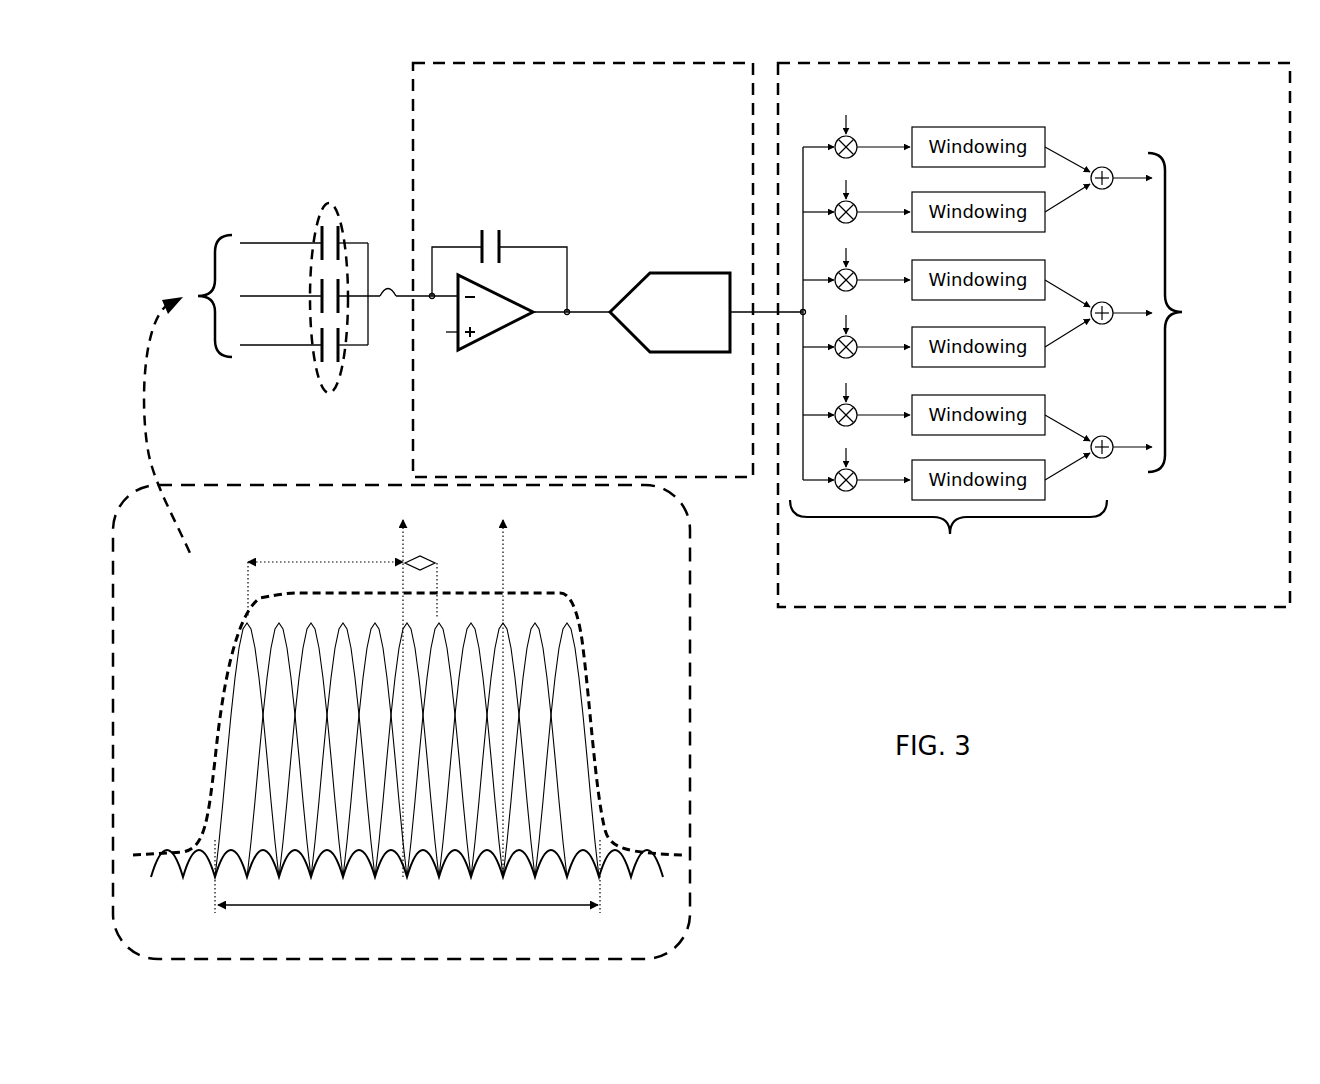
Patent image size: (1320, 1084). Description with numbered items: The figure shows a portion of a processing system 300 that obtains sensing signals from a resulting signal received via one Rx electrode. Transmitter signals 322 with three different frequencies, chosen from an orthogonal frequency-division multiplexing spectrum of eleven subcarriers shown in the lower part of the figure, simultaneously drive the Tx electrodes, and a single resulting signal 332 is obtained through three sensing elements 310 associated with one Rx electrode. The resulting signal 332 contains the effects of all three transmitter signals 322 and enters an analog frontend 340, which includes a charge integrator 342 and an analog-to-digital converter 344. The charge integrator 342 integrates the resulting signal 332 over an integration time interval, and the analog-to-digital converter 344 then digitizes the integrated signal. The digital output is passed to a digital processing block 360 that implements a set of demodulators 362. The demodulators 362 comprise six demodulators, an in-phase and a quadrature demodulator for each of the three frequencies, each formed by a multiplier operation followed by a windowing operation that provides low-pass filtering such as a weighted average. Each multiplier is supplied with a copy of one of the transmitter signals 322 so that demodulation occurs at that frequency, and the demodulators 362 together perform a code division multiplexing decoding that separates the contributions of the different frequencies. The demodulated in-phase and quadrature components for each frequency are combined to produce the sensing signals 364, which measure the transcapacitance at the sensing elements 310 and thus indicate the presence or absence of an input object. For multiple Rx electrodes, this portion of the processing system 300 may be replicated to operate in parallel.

The processing system 300 is at (701, 500).
The sensing elements 310 is at (326, 258).
The transmitter signals 322 is at (690, 922).
The resulting signal 332 is at (392, 291).
The analog frontend 340 is at (600, 270).
The charge integrator 342 is at (486, 210).
The analog-to-digital converter 344 is at (705, 370).
The digital processing block 360 is at (1034, 335).
The demodulators 362 is at (948, 344).
The sensing signals 364 is at (1159, 313).